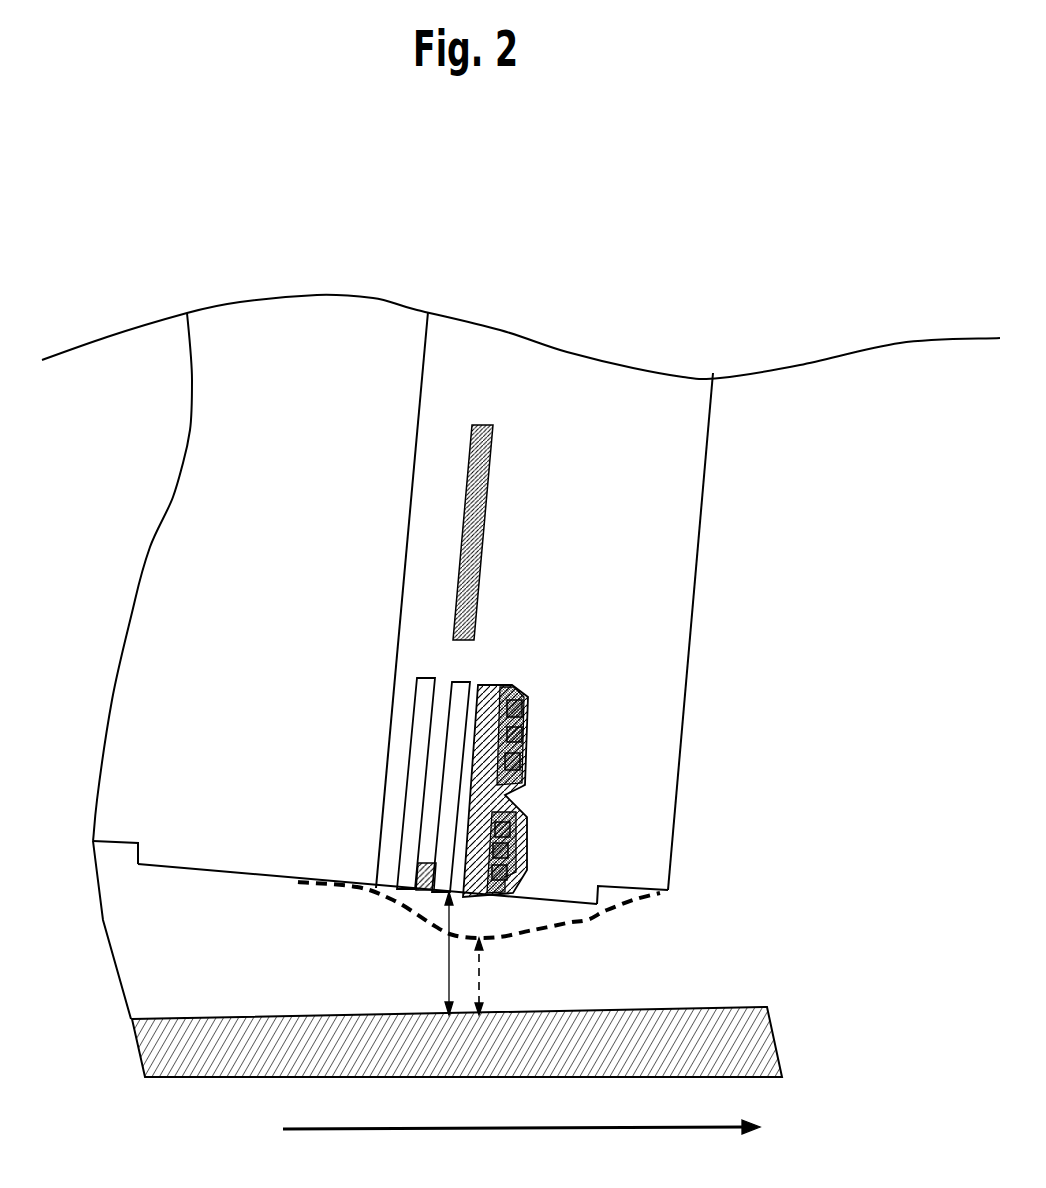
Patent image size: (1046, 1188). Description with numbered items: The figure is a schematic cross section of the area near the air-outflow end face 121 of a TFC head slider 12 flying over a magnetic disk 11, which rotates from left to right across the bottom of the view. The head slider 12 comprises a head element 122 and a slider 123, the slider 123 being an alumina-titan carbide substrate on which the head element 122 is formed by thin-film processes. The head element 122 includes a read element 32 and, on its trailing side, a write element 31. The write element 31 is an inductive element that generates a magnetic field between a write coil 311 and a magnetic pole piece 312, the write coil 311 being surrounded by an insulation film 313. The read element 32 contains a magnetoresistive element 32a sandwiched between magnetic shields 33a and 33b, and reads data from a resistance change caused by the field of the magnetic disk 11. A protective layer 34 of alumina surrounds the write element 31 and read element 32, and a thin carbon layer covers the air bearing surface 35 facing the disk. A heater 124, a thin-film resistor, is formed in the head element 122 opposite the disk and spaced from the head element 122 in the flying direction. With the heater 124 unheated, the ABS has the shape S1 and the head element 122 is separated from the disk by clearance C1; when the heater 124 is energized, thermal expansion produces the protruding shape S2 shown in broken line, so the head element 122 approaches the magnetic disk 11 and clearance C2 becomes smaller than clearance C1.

The magnetic disk 11 is at (697, 1013).
The head slider 12 is at (580, 288).
The air-outflow end face 121 is at (703, 487).
The head element 122 is at (753, 645).
The slider 123 is at (103, 858).
The heater 124 is at (483, 548).
The write element 31 is at (646, 791).
The write coil 311 is at (530, 698).
The magnetic pole piece 312 is at (528, 845).
The insulation film 313 is at (527, 752).
The read element 32 is at (370, 806).
The magnetoresistive element 32a is at (423, 891).
The magnetic shield 33a is at (462, 682).
The magnetic shield 33b is at (413, 702).
The protective layer 34 is at (440, 412).
The air bearing surface 35 is at (183, 868).
The ABS surface shape S1 is at (357, 887).
The protruding shape S2 is at (563, 932).
The clearance C1 is at (438, 953).
The clearance C2 is at (495, 976).